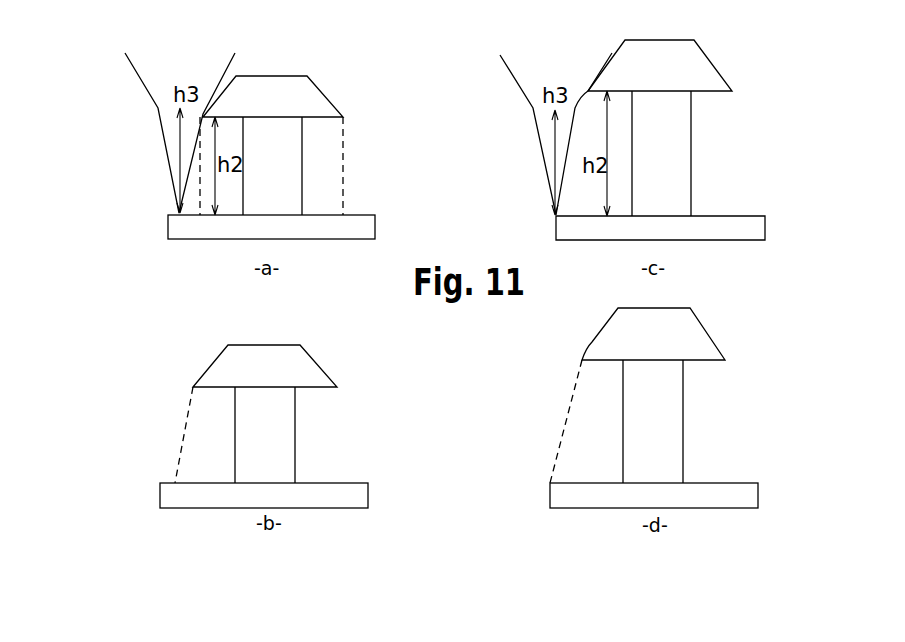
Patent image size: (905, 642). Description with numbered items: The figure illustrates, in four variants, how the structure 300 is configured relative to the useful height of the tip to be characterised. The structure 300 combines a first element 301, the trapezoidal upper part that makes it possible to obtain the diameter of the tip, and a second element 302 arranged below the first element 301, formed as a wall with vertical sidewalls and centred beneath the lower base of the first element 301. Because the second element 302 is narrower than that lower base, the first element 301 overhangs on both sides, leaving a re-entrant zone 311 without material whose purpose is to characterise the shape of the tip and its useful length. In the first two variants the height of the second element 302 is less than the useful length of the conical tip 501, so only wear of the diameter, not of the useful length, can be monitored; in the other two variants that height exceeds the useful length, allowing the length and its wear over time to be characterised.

The single structure 300 is at (433, 254).
The first element 301 is at (317, 88).
The second element 302 is at (303, 167).
The zone without material 311 is at (207, 162).
The conical tip 501 is at (137, 78).